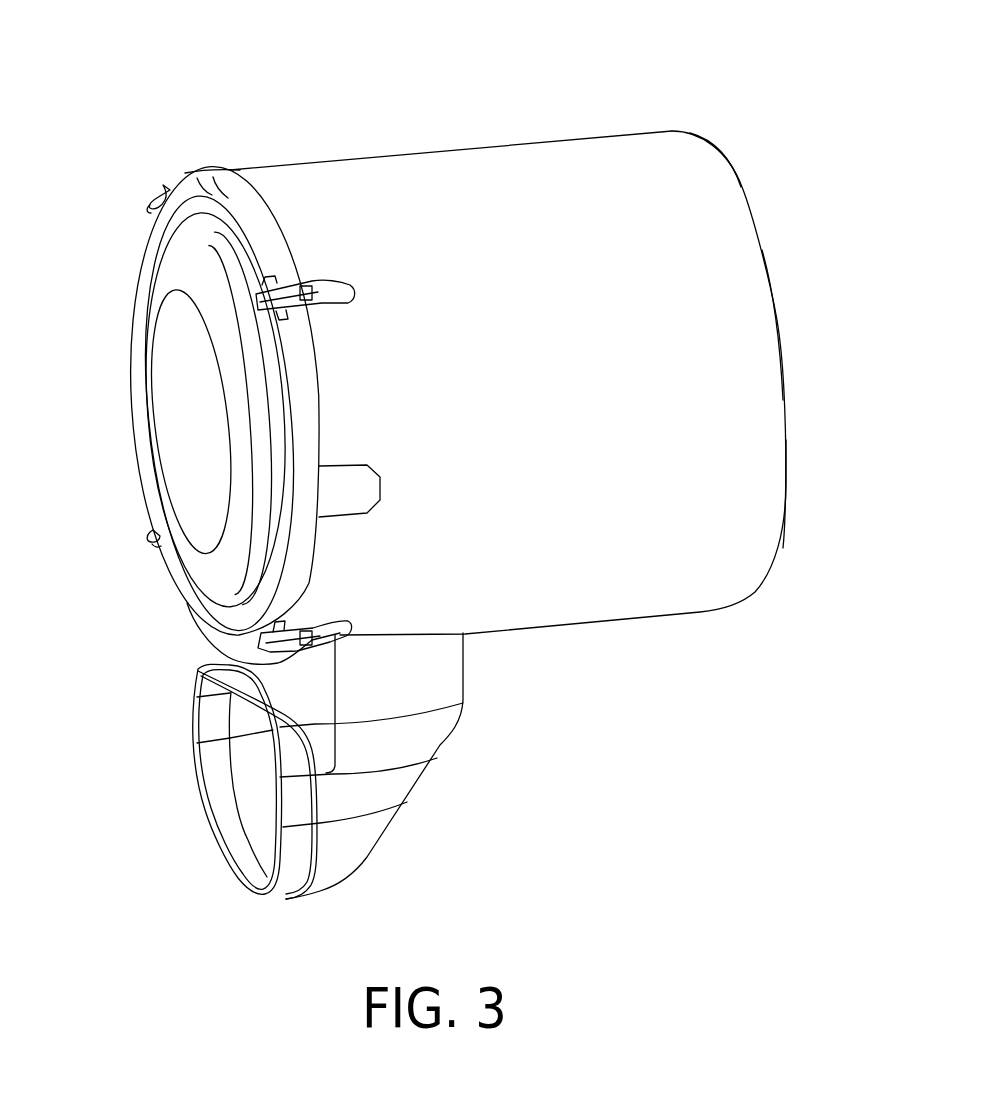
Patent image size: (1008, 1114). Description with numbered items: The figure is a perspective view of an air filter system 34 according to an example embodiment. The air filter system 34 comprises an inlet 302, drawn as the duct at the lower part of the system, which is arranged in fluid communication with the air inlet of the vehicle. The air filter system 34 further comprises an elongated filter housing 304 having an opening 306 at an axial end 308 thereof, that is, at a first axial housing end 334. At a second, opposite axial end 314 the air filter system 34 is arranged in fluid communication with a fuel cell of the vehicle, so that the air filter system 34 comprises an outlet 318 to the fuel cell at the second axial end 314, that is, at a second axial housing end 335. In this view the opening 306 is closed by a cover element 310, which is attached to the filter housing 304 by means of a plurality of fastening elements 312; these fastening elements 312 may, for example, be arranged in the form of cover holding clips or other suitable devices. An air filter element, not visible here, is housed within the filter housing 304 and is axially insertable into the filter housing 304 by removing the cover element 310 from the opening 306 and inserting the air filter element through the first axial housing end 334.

The air filter system 34 is at (468, 117).
The inlet 302 is at (228, 821).
The elongated filter housing 304 is at (636, 130).
The opening 306 is at (245, 272).
The axial end 308 is at (203, 193).
The cover element 310 is at (178, 412).
The fastening elements 312 is at (152, 188).
The second axial end 314 is at (741, 188).
The outlet 318 is at (782, 338).
The first axial housing end 334 is at (225, 206).
The second axial housing end 335 is at (787, 484).